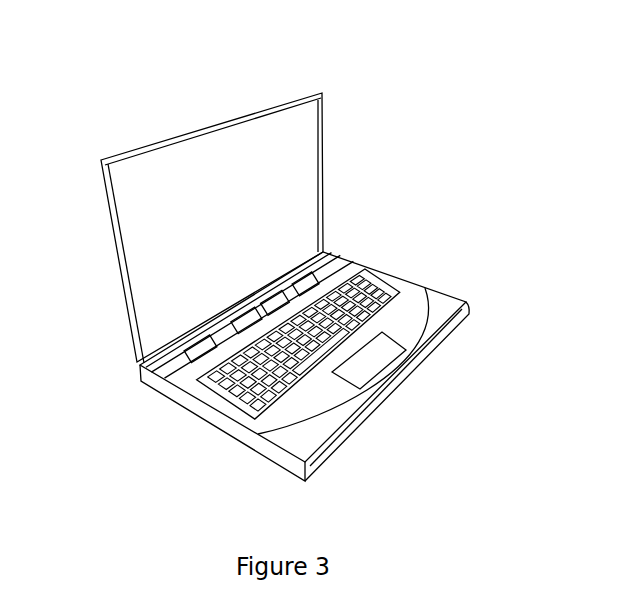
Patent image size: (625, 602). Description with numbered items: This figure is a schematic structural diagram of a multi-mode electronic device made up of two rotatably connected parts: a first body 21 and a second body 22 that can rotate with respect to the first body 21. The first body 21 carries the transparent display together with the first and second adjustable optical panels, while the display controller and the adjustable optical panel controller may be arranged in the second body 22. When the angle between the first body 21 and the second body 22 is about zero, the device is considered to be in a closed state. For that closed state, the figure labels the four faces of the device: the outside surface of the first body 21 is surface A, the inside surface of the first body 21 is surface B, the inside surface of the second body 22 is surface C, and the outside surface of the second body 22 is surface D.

The first body 21 is at (237, 120).
The surface A is at (108, 225).
The surface B is at (302, 167).
The surface C is at (398, 302).
The surface D is at (428, 352).
The second body 22 is at (359, 410).